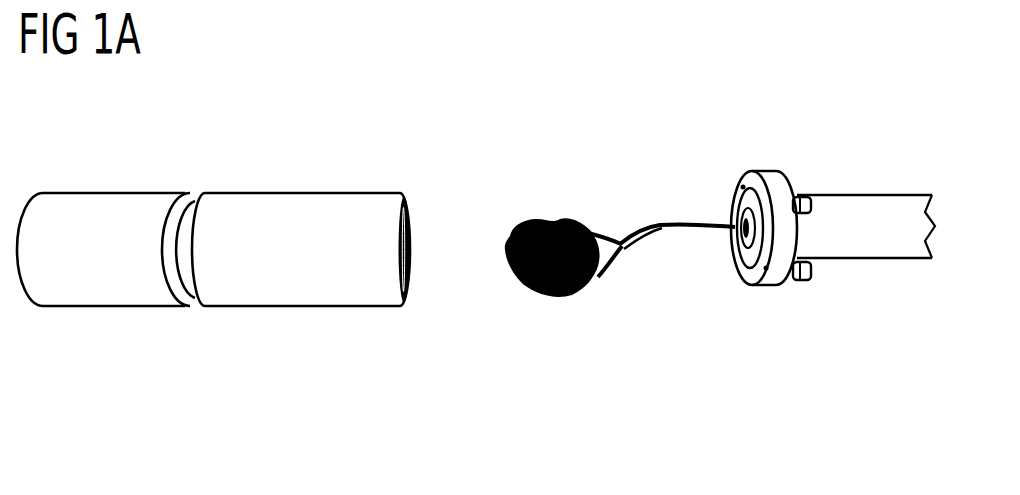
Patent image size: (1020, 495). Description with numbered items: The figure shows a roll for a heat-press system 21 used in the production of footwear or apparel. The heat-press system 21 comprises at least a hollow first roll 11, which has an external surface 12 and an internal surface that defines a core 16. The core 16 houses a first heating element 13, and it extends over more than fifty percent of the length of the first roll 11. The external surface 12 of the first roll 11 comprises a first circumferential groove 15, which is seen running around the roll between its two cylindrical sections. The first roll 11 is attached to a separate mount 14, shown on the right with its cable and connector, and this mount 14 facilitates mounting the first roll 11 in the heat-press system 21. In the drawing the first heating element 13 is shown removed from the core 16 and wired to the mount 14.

The heat-press system 21 is at (146, 140).
The external surface 12 is at (103, 298).
The first circumferential groove 15 is at (191, 302).
The first roll 11 is at (302, 299).
The core 16 is at (440, 195).
The first heating element 13 is at (545, 285).
The mount 14 is at (877, 250).